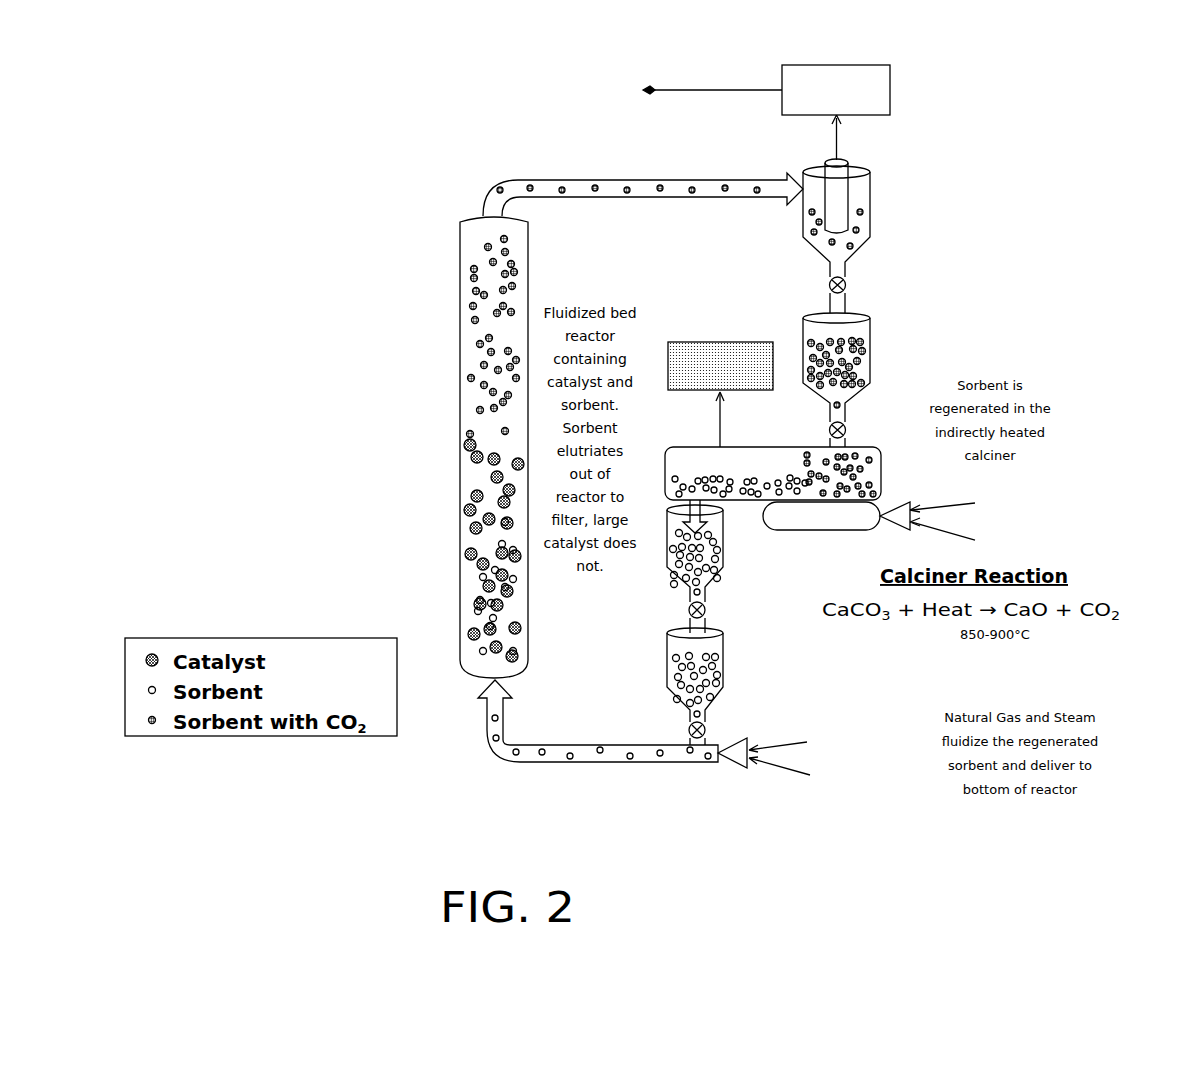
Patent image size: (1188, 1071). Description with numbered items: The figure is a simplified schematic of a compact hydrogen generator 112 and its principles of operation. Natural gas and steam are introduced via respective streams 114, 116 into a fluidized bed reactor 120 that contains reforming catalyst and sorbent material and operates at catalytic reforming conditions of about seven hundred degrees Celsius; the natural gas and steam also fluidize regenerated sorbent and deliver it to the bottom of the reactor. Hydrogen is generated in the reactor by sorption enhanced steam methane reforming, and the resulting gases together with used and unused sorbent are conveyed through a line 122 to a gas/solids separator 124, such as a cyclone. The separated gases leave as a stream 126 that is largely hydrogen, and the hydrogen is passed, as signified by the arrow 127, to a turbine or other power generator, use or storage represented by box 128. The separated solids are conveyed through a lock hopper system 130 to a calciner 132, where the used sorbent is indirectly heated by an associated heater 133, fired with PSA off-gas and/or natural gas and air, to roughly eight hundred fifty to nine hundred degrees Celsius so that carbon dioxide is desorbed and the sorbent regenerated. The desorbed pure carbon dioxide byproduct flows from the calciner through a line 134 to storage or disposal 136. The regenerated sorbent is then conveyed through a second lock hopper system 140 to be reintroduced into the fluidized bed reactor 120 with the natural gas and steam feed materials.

The compact hydrogen generator 112 is at (532, 148).
The natural gas stream 114 is at (770, 746).
The steam stream 116 is at (770, 770).
The fluidized bed reactor 120 is at (460, 446).
The line 122 is at (597, 180).
The gas/solids separator 124 is at (875, 210).
The gas stream 126 is at (838, 140).
The arrow 127 is at (656, 89).
The box 128 is at (815, 65).
The lock hopper system 130 is at (908, 352).
The calciner 132 is at (748, 446).
The heater 133 is at (796, 531).
The line 134 is at (718, 422).
The storage or disposal 136 is at (700, 342).
The lock hopper system 140 is at (660, 611).